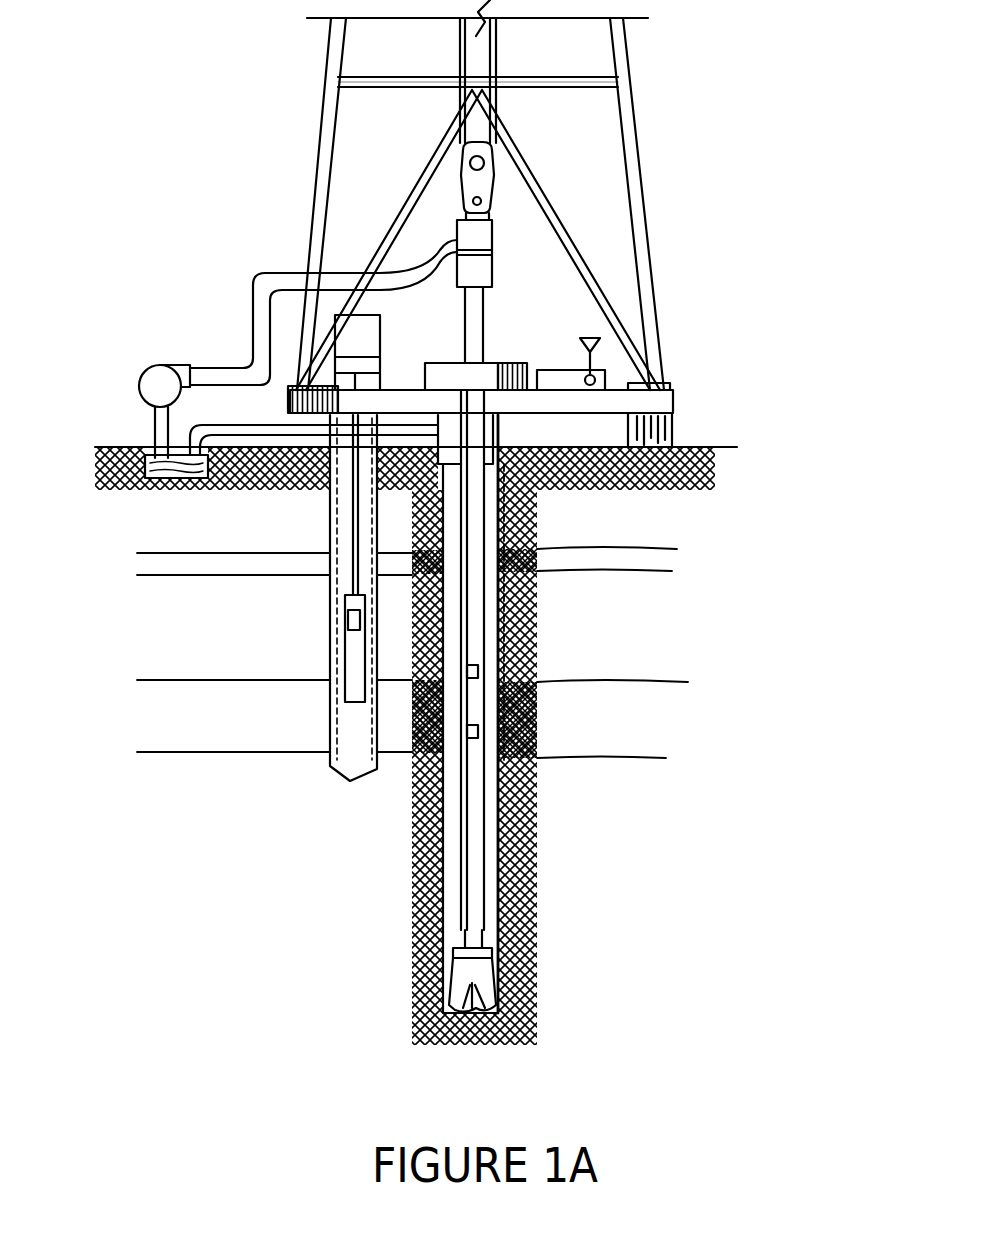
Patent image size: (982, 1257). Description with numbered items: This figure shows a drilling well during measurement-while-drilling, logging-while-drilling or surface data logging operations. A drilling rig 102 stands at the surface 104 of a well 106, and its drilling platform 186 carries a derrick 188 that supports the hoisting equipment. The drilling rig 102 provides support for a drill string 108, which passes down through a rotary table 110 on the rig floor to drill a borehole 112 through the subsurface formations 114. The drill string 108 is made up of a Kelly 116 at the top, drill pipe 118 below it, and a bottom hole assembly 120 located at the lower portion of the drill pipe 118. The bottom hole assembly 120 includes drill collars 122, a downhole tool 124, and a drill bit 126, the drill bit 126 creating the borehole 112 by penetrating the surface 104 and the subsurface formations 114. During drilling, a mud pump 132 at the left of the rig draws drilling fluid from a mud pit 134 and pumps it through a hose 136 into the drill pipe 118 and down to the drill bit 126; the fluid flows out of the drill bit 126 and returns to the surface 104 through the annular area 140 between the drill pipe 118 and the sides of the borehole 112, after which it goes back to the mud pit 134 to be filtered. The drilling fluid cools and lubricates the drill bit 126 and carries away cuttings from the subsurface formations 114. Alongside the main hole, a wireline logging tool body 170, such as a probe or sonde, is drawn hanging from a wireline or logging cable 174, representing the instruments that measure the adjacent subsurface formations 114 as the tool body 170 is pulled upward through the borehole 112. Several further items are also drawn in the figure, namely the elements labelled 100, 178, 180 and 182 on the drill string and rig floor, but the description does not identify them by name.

The sensor 100 is at (333, 602).
The drilling rig 102 is at (636, 176).
The surface 104 is at (725, 447).
The well 106 is at (503, 443).
The drill string 108 is at (487, 552).
The rotary table 110 is at (435, 363).
The borehole 112 is at (505, 492).
The subsurface formations 114 is at (140, 522).
The Kelly 116 is at (487, 300).
The drill pipe 118 is at (467, 635).
The bottom hole assembly 120 is at (403, 608).
The drill collars 122 is at (537, 597).
The downhole tool 124 is at (478, 716).
The drill bit 126 is at (477, 970).
The mud pump 132 is at (170, 365).
The mud pit 134 is at (163, 488).
The hose 136 is at (263, 273).
The annular area 140 is at (490, 650).
The wireline logging tool body 170 is at (333, 646).
The wireline or logging cable 174 is at (352, 499).
The drawworks 178 is at (543, 368).
The control unit 180 is at (382, 320).
The communication antenna 182 is at (583, 369).
The drilling platform 186 is at (673, 398).
The derrick 188 is at (630, 73).